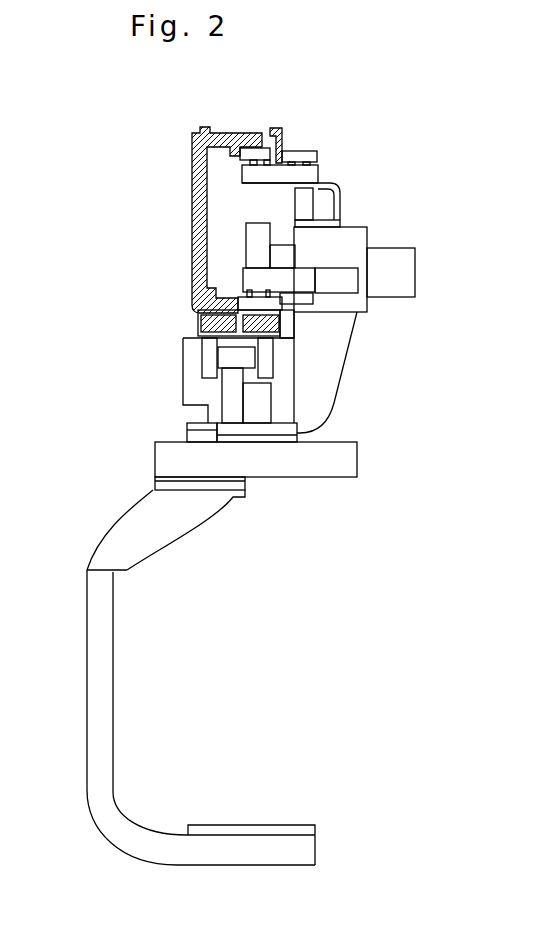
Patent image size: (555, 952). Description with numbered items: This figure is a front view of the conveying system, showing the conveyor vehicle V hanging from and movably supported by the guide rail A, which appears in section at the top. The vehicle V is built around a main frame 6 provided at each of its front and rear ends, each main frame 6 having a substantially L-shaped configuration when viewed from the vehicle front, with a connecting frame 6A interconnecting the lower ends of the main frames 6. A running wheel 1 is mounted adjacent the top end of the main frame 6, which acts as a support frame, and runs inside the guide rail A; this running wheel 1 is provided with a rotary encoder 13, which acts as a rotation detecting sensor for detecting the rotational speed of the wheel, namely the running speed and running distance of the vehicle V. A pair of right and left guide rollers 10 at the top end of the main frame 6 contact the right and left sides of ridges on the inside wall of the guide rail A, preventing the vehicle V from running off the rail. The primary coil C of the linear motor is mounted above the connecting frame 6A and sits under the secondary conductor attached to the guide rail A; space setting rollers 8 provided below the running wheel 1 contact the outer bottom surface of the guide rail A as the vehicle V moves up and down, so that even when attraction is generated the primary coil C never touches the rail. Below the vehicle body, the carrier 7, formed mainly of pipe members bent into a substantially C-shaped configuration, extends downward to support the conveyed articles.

The guide rail A is at (187, 210).
The running wheel 1 is at (254, 224).
The main frame 6 is at (336, 407).
The connecting frame 6A is at (316, 470).
The carrier 7 is at (230, 857).
The space setting roller 8 is at (203, 362).
The guide roller 10 is at (263, 152).
The rotary encoder 13 is at (415, 276).
The primary coil C is at (183, 397).
The vehicle V is at (86, 600).